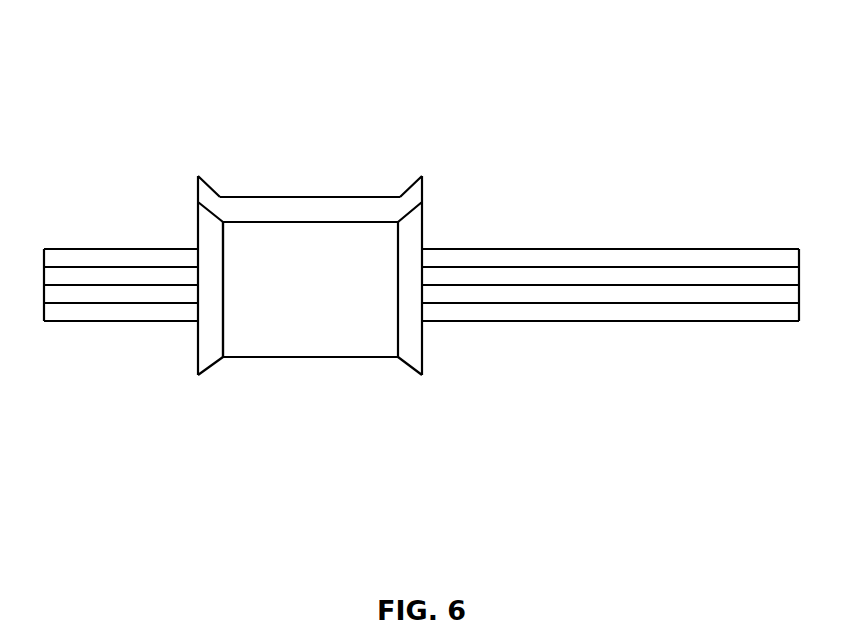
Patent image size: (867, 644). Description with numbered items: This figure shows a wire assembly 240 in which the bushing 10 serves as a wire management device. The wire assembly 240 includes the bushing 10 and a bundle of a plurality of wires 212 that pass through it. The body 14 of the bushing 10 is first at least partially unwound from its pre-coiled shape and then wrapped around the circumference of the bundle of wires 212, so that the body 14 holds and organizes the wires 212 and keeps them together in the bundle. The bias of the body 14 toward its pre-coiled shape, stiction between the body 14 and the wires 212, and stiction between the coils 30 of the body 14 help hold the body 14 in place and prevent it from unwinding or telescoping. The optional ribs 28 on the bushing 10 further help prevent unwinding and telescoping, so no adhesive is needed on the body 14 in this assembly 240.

The wire assembly 240 is at (421, 229).
The wires 212 is at (722, 321).
The ribs 28 is at (212, 193).
The coils 30 is at (387, 198).
The bushing 10 is at (248, 350).
The body 14 is at (235, 272).